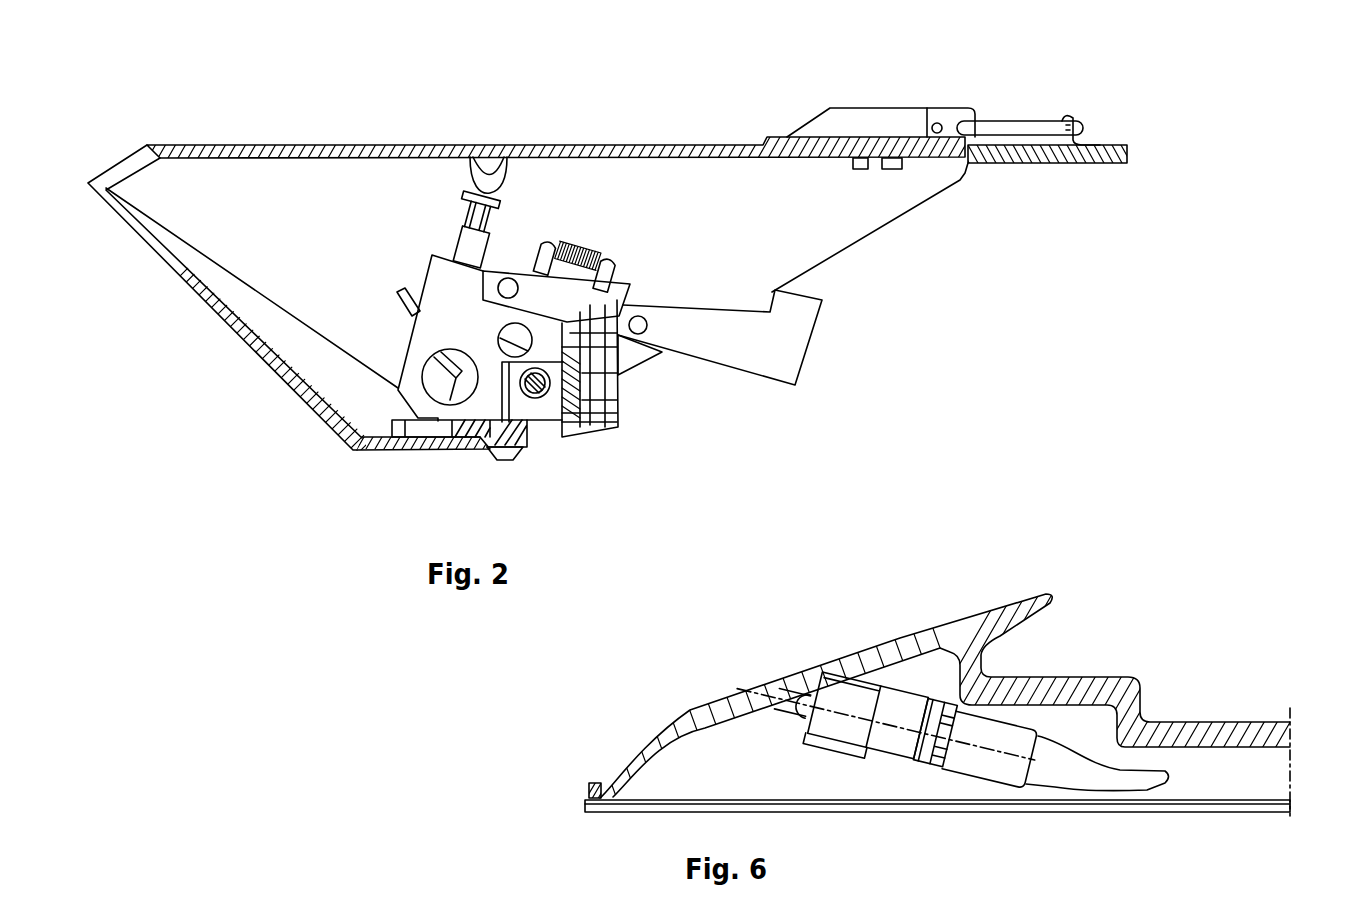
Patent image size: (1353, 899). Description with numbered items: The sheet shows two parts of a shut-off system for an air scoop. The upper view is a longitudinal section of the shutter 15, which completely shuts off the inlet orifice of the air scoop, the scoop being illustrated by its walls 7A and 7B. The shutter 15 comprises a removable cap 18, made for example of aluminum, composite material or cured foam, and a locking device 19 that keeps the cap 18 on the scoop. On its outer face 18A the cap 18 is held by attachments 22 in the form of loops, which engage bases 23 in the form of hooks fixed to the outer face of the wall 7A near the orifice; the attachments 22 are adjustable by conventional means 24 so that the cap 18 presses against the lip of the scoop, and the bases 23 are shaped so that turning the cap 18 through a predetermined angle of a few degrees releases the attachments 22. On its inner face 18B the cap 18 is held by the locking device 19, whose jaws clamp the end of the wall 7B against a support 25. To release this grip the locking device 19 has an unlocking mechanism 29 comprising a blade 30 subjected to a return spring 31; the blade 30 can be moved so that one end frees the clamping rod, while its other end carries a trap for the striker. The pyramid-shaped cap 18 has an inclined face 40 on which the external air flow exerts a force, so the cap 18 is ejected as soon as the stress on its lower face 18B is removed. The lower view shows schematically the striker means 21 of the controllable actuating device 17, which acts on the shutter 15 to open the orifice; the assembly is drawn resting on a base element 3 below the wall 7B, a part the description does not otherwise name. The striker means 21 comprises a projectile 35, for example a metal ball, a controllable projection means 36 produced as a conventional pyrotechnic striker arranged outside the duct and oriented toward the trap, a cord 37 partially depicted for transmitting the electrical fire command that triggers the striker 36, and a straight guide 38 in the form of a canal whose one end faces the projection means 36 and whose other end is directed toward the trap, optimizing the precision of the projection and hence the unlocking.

In FIG. 2, the removable cap 18 is at (337, 145).
In FIG. 2, the outer face 18A is at (671, 125).
In FIG. 2, the inner face 18B is at (441, 468).
In FIG. 2, the face 40 is at (234, 366).
In FIG. 2, the conventional means 24 is at (905, 86).
In FIG. 2, the attachments 22 is at (1013, 119).
In FIG. 2, the bases 23 is at (1092, 145).
In FIG. 2, the wall 7A is at (1055, 163).
In FIG. 2, the unlocking mechanism 29 is at (684, 235).
In FIG. 2, the shutter 15 is at (970, 283).
In FIG. 2, the locking device 19 is at (709, 384).
In FIG. 2, the support 25 is at (617, 430).
In FIG. 2, the blade 30 is at (675, 318).
In FIG. 2, the return spring 31 is at (576, 248).
In FIG. 6, the striker means 21 is at (851, 624).
In FIG. 6, the controllable actuating device 17 is at (1108, 614).
In FIG. 6, the wall 7B is at (600, 786).
In FIG. 6, the base plate 3 is at (1015, 808).
In FIG. 6, the controllable projection means 36 is at (889, 755).
In FIG. 6, the projectile 35 is at (800, 703).
In FIG. 6, the straight guide 38 is at (762, 715).
In FIG. 6, the cord 37 is at (1130, 782).